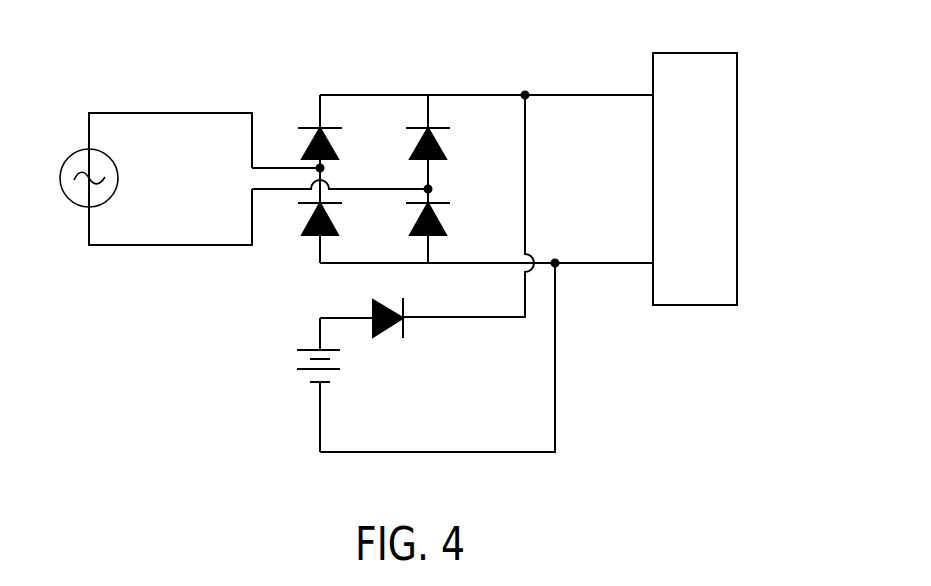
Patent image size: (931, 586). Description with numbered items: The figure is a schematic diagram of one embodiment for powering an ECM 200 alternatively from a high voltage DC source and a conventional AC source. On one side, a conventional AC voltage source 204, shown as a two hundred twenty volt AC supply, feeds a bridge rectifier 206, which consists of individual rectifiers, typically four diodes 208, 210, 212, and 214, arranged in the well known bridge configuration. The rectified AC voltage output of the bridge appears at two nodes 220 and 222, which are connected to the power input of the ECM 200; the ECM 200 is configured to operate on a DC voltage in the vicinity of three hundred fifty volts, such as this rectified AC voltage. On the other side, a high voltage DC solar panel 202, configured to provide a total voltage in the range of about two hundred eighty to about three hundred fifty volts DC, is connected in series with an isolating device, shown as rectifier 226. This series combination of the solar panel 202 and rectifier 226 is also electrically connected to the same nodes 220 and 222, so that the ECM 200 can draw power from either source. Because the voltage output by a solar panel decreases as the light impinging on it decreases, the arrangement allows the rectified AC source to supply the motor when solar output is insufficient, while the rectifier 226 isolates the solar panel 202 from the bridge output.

The ECM 200 is at (737, 117).
The DC solar panel 202 is at (190, 358).
The AC voltage source 204 is at (67, 160).
The bridge rectifier 206 is at (428, 137).
The diode 208 is at (333, 148).
The diode 210 is at (441, 148).
The diode 212 is at (333, 224).
The diode 214 is at (441, 224).
The node 220 is at (590, 95).
The node 222 is at (597, 263).
The rectifier 226 is at (410, 327).